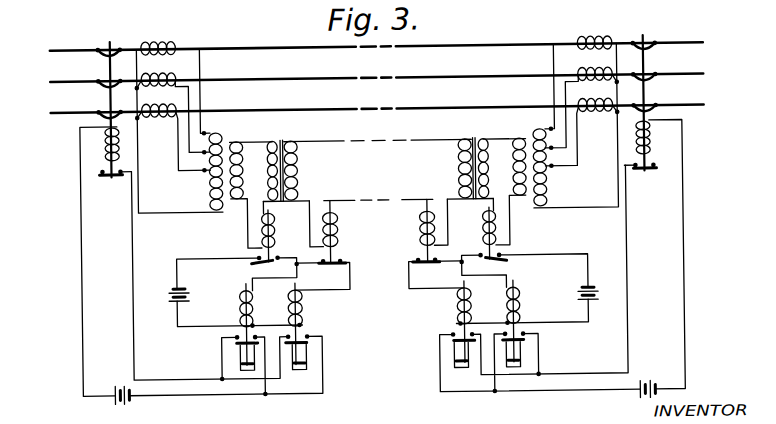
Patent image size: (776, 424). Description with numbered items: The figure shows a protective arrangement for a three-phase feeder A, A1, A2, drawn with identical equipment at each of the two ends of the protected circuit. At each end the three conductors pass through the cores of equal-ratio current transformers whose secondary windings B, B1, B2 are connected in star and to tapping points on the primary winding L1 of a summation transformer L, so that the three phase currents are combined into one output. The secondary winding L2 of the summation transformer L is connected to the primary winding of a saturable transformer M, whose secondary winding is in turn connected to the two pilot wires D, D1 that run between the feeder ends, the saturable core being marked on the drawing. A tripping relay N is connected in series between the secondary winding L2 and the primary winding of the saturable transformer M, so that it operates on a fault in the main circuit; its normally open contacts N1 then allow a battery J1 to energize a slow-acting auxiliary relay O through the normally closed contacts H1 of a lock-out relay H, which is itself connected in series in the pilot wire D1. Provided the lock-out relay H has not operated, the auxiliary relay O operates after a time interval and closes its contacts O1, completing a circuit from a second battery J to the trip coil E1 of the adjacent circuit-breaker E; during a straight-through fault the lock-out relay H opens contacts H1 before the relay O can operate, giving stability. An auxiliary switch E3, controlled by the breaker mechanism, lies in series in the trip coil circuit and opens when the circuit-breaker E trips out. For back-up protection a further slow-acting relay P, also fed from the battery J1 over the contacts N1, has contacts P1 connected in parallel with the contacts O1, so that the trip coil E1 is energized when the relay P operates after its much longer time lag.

The three-phase feeder conductor A is at (325, 46).
The three-phase feeder conductor A1 is at (322, 78).
The three-phase feeder conductor A2 is at (322, 108).
The current transformer secondary winding B is at (178, 48).
The current transformer secondary winding B1 is at (177, 78).
The current transformer secondary winding B2 is at (177, 110).
The pilot wire D is at (345, 140).
The pilot wire D1 is at (343, 199).
The circuit-breaker E is at (110, 64).
The trip coil E1 is at (106, 140).
The auxiliary switch E3 is at (110, 174).
The lock-out relay H is at (337, 224).
The lock-out relay contacts H1 is at (335, 260).
The battery J is at (128, 394).
The battery J1 is at (172, 290).
The summation transformer L is at (223, 151).
The summation transformer primary winding L1 is at (210, 186).
The summation transformer secondary winding L2 is at (279, 160).
The saturable transformer M is at (282, 139).
The tripping relay N is at (261, 220).
The tripping relay contacts N1 is at (257, 262).
The slow-acting auxiliary relay O is at (302, 308).
The auxiliary relay contacts O1 is at (308, 339).
The slow-acting relay P is at (239, 310).
The back-up relay contacts P1 is at (235, 336).